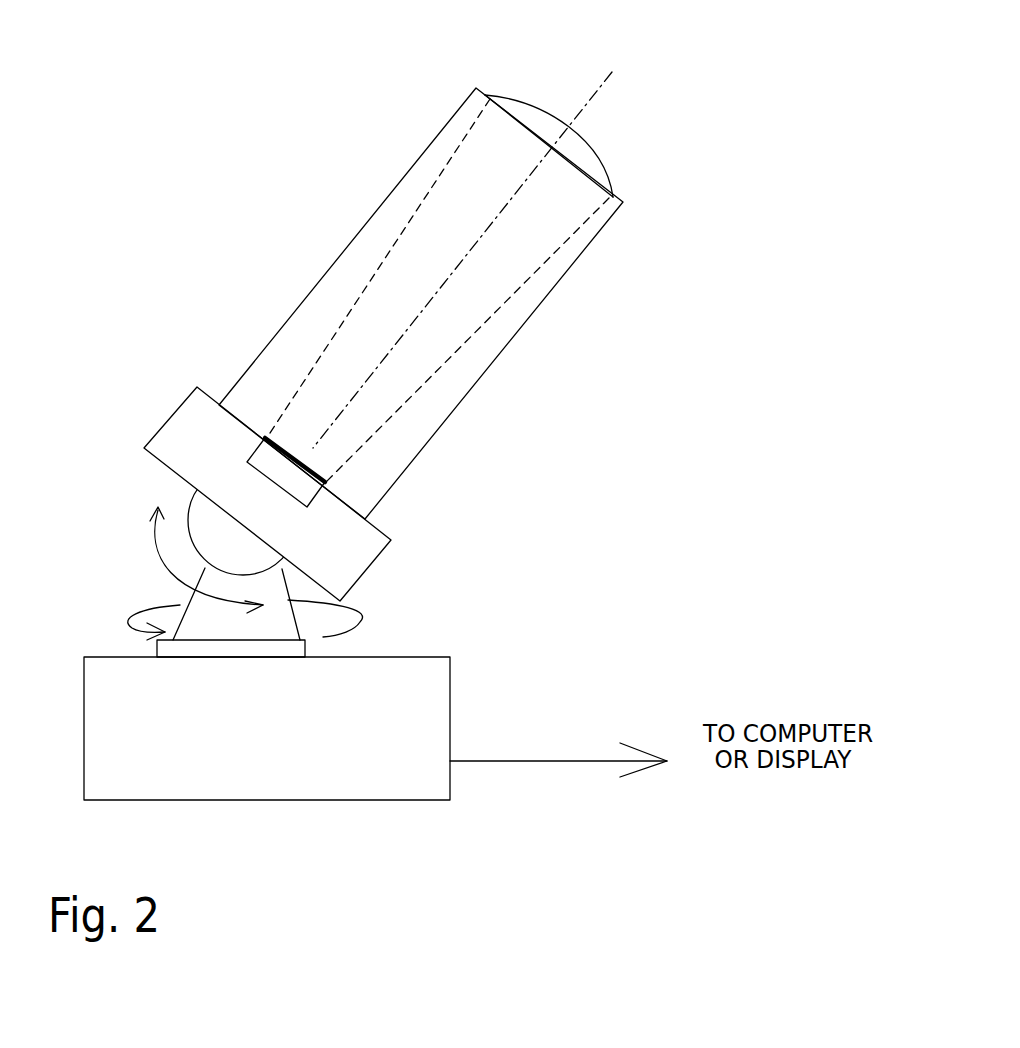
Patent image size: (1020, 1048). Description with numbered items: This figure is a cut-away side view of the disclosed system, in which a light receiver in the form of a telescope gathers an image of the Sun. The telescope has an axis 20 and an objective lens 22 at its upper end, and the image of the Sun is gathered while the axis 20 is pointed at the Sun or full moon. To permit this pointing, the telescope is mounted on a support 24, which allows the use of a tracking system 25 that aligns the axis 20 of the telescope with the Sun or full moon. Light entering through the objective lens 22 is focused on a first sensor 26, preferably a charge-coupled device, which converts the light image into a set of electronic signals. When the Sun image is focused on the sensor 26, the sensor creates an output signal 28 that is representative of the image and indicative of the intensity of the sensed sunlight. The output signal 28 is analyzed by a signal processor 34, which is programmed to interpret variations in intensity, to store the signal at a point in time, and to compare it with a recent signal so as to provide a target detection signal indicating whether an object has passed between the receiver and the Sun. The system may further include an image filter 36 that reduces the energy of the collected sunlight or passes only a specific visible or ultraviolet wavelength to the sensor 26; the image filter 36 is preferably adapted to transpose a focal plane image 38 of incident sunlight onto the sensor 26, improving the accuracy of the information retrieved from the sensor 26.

The axis 20 is at (585, 104).
The objective lens 22 is at (526, 102).
The support 24 is at (187, 503).
The tracking system 25 is at (190, 598).
The first sensor 26 is at (312, 492).
The output signal 28 is at (187, 422).
The signal processor 34 is at (250, 738).
The image filter 36 is at (580, 168).
The focal plane image 38 is at (257, 505).